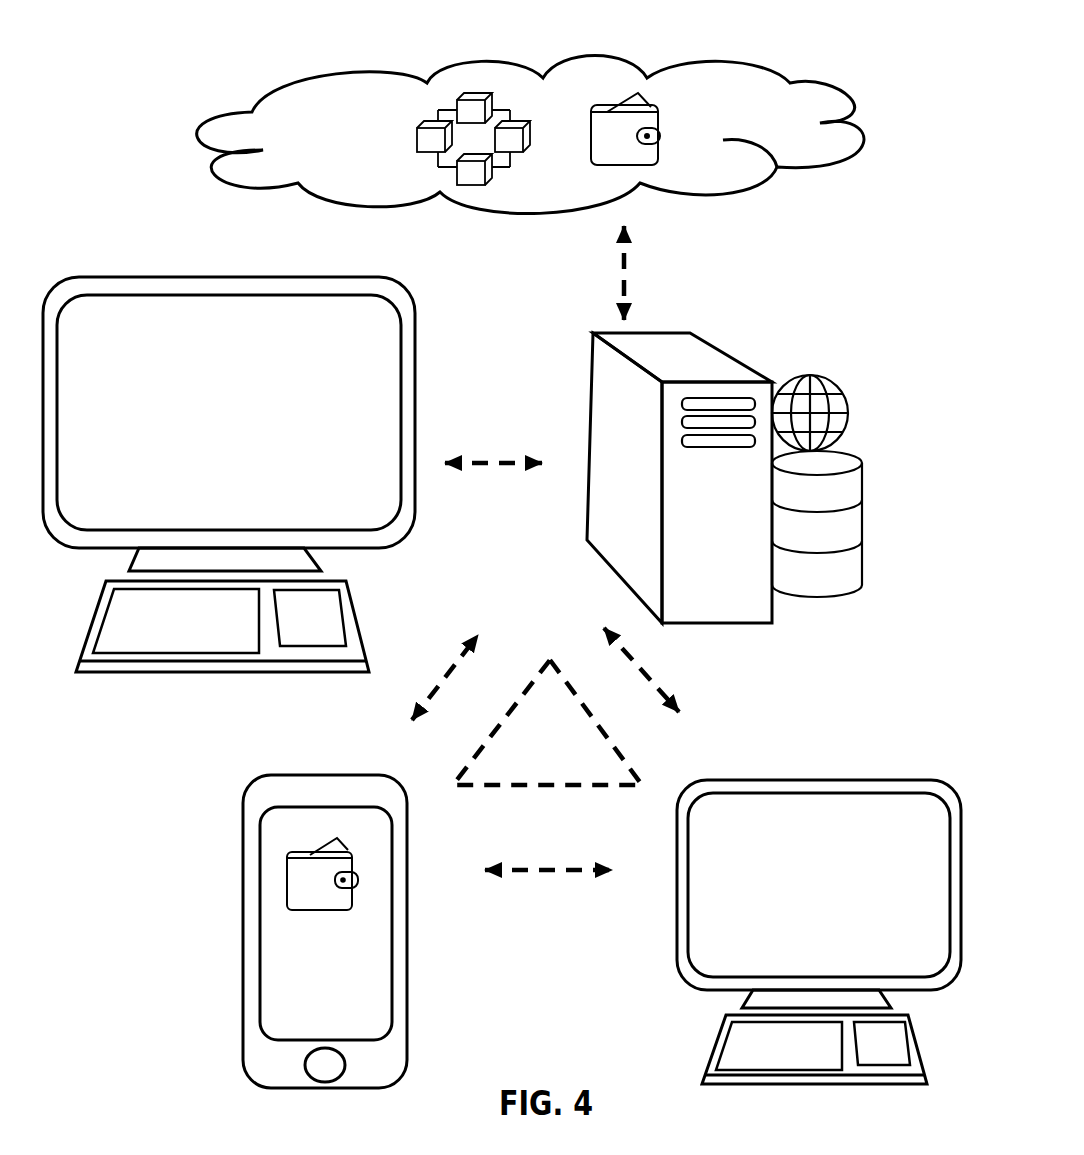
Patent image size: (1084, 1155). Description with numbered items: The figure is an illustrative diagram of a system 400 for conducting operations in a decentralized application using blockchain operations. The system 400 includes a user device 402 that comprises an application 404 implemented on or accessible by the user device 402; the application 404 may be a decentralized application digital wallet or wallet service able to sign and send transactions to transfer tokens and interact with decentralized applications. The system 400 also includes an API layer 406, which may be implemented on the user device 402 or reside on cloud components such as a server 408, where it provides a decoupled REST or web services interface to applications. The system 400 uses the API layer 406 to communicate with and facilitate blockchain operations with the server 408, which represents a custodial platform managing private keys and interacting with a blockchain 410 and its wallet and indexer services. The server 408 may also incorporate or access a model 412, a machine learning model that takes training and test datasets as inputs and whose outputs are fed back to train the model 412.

The system 400 is at (472, 44).
The user device 402 is at (328, 772).
The application 404 is at (300, 880).
The API layer 406 is at (532, 758).
The server 408 is at (577, 408).
The blockchain 410 is at (660, 212).
The model 412 is at (253, 267).